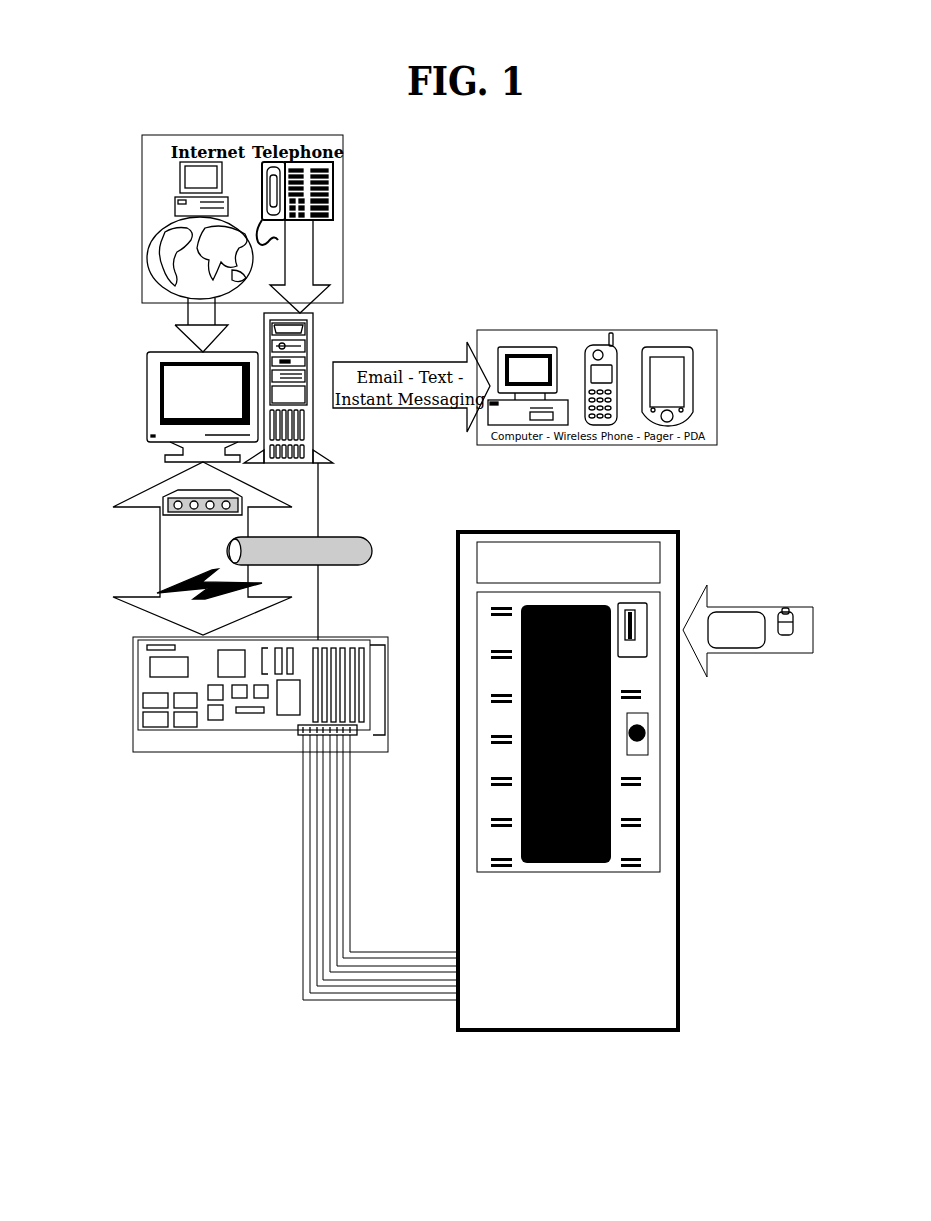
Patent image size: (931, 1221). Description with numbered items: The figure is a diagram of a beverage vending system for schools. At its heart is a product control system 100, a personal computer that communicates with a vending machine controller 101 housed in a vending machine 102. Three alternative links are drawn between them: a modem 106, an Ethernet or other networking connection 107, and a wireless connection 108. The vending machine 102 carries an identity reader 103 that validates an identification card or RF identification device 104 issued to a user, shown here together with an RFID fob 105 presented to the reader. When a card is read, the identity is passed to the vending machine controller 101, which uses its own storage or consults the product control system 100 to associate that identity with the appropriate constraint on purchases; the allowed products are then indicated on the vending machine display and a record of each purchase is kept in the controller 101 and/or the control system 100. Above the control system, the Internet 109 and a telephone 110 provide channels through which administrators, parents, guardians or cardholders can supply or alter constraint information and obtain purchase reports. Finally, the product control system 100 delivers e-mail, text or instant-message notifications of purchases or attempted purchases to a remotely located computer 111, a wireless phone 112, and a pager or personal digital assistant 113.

The product control system 100 is at (147, 385).
The vending machine controller 101 is at (138, 694).
The vending machine 102 is at (570, 532).
The identity reader 103 is at (631, 624).
The RF identification device 104 is at (737, 610).
The RFID tag 105 is at (785, 610).
The modem 106 is at (163, 500).
The Ethernet or other networking technologies 107 is at (230, 553).
The wireless connection 108 is at (160, 585).
The Internet 109 is at (175, 203).
The telephone 110 is at (333, 174).
The remote computer 111 is at (530, 347).
The wireless phone 112 is at (600, 346).
The pager or personal digital assistant 113 is at (668, 347).